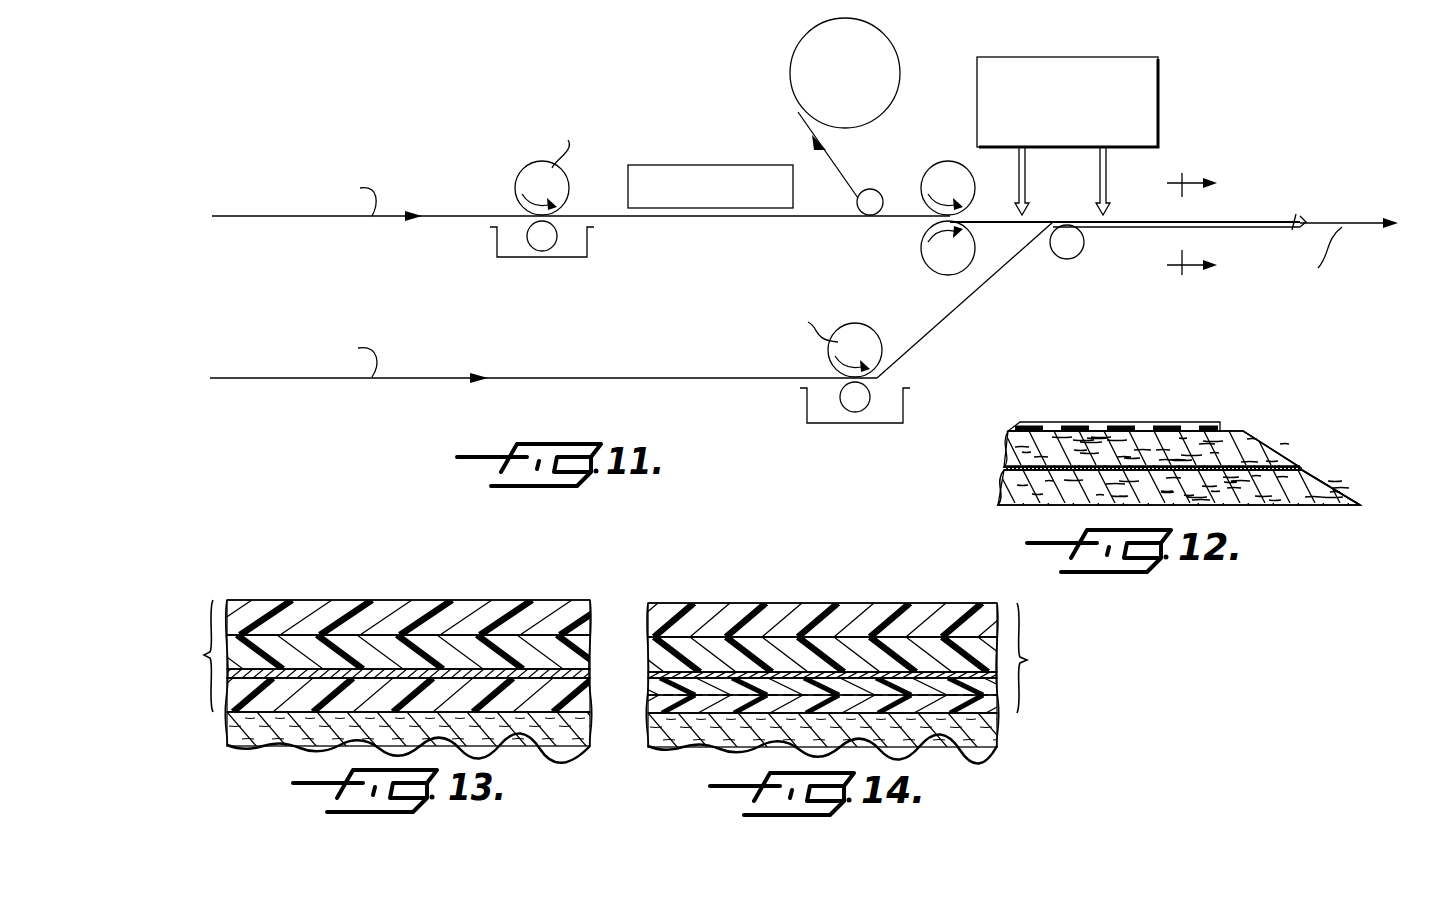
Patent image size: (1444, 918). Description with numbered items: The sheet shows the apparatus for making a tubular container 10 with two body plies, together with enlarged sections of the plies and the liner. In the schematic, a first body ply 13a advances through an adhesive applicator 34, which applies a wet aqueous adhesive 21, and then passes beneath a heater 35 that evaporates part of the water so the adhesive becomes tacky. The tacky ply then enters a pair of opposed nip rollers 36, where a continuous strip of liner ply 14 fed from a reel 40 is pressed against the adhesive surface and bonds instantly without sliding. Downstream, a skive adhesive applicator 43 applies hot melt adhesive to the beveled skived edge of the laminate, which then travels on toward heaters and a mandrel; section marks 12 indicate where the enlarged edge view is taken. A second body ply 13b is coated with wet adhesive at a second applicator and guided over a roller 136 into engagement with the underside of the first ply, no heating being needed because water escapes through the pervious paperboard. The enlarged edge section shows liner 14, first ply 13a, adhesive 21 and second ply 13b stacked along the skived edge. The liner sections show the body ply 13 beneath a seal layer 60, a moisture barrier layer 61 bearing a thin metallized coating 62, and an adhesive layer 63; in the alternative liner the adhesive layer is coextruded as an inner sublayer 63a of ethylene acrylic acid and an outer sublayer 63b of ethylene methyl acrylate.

In FIG. 11, the tubular container 10 is at (1294, 207).
In FIG. 12, the tubular container 10 is at (1272, 409).
In FIG. 11, the section line of FIG. 12 is at (1169, 222).
In FIG. 13, the body ply 13 is at (287, 738).
In FIG. 14, the body ply 13 is at (965, 742).
In FIG. 11, the first body ply 13a is at (442, 218).
In FIG. 12, the first body ply 13a is at (1032, 452).
In FIG. 11, the second body ply 13b is at (428, 380).
In FIG. 12, the second body ply 13b is at (997, 492).
In FIG. 11, the liner ply 14 is at (840, 174).
In FIG. 12, the liner ply 14 is at (1093, 421).
In FIG. 13, the liner ply 14 is at (191, 656).
In FIG. 14, the liner ply 14 is at (1043, 658).
In FIG. 12, the adhesive 21 is at (1230, 431).
In FIG. 11, the adhesive applicator 34 is at (522, 180).
In FIG. 11, the heater 35 is at (707, 165).
In FIG. 11, the nip rollers 36 is at (948, 162).
In FIG. 11, the reel 40 is at (793, 52).
In FIG. 11, the skive adhesive applicator 43 is at (1150, 77).
In FIG. 13, the seal layer 60 is at (303, 612).
In FIG. 14, the seal layer 60 is at (750, 620).
In FIG. 13, the moisture barrier layer 61 is at (405, 647).
In FIG. 14, the moisture barrier layer 61 is at (882, 645).
In FIG. 13, the metallized coating 62 is at (587, 668).
In FIG. 14, the metallized coating 62 is at (950, 672).
In FIG. 13, the adhesive layer 63 is at (550, 725).
In FIG. 14, the inner sublayer 63a is at (1000, 688).
In FIG. 14, the outer sublayer 63b is at (998, 708).
In FIG. 11, the guide roller 136 is at (1020, 258).